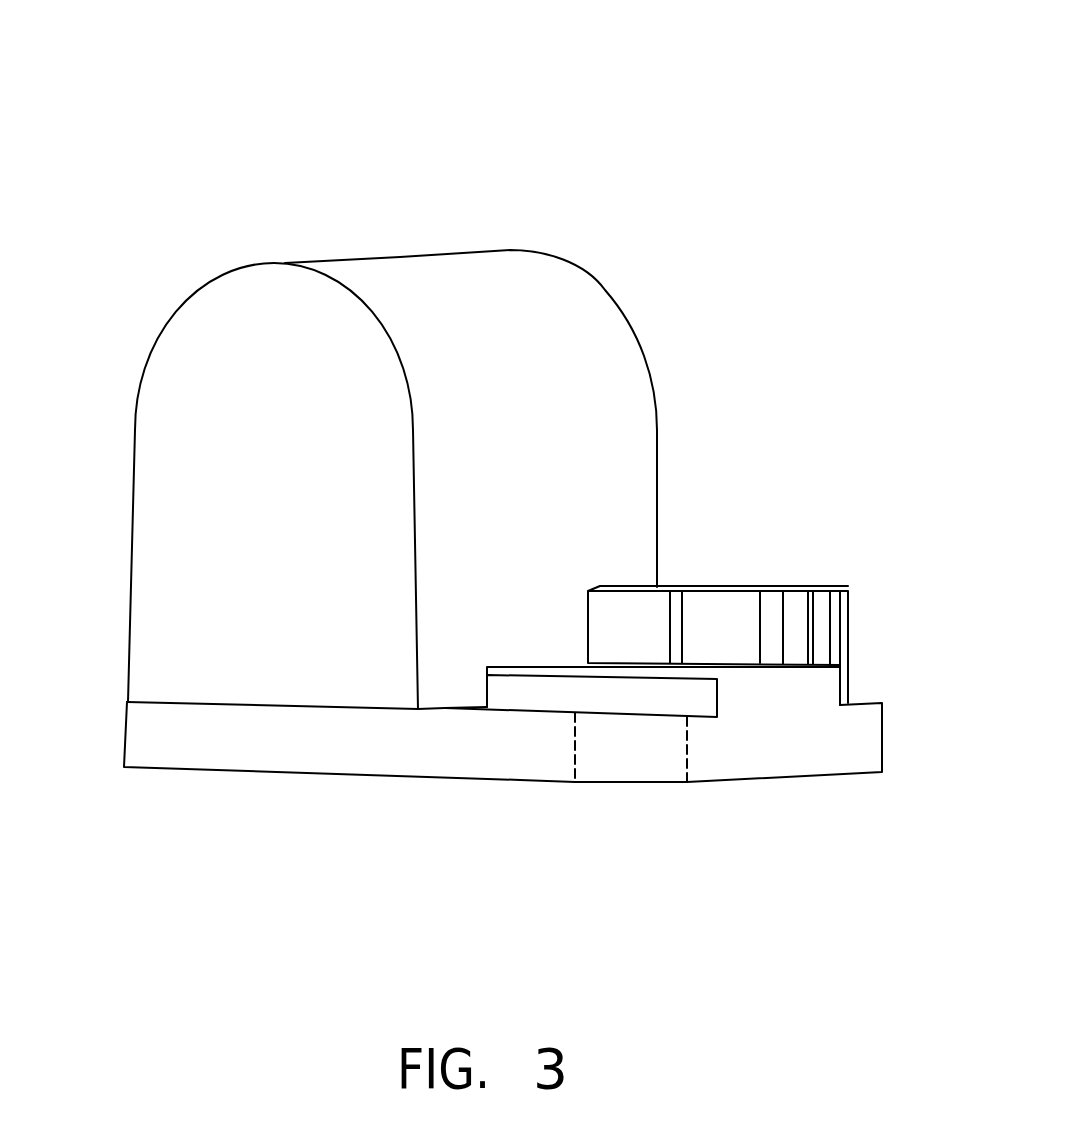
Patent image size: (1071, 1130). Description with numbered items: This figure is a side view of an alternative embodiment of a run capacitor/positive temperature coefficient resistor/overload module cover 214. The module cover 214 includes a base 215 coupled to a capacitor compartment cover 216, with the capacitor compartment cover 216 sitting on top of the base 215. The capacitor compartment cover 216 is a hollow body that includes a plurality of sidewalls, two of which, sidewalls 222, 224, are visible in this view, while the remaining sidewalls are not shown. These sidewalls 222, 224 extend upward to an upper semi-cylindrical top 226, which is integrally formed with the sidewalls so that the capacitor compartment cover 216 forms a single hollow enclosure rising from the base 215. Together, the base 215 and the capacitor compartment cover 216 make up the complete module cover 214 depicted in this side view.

The module cover 214 is at (355, 78).
The capacitor compartment cover 216 is at (163, 332).
The upper semi-cylindrical top 226 is at (592, 277).
The sidewall 222 is at (627, 497).
The sidewall 224 is at (288, 677).
The base 215 is at (810, 753).